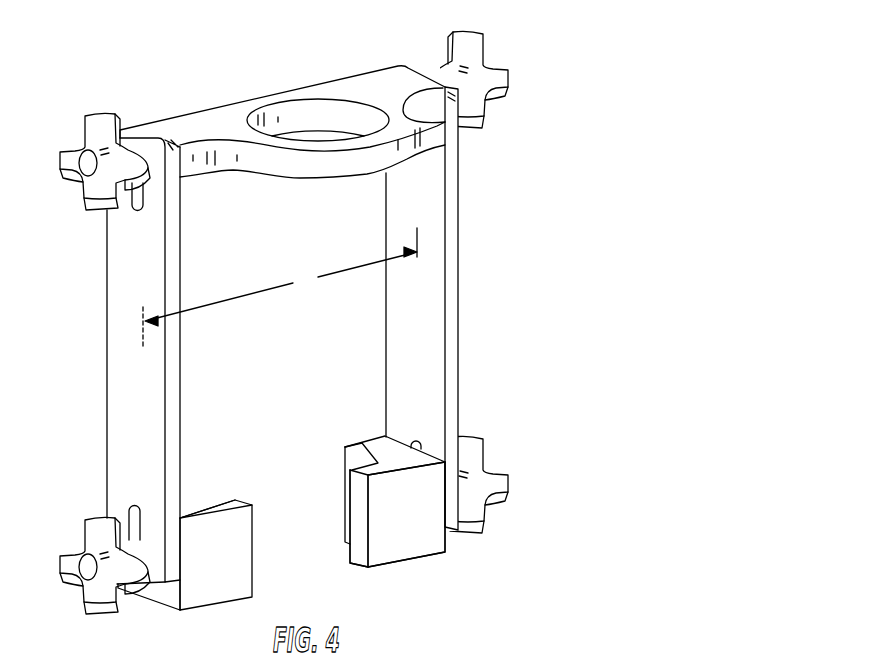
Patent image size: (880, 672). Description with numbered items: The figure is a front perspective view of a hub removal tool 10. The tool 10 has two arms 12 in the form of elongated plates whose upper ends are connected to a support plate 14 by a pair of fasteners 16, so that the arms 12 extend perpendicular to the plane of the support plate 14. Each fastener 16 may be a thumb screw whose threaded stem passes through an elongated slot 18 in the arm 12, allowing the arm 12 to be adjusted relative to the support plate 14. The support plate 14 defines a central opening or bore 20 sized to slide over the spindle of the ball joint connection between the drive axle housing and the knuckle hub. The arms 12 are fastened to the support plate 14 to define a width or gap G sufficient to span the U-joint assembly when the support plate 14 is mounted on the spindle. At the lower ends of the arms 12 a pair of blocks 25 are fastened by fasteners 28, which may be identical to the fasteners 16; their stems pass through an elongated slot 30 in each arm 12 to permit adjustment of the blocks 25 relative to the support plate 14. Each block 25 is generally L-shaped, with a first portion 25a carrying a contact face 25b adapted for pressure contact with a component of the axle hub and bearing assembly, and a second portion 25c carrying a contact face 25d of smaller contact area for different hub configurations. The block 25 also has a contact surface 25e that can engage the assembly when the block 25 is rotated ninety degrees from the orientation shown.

The hub removal tool 10 is at (291, 310).
The arms 12 is at (453, 312).
The support plate 14 is at (282, 89).
The fasteners 16 is at (85, 133).
The elongated slot 18 is at (137, 190).
The central opening or bore 20 is at (290, 115).
The blocks 25 is at (289, 495).
The first portion 25a is at (358, 550).
The contact face 25b is at (417, 517).
The second portion 25c is at (355, 460).
The contact face 25d is at (364, 442).
The contact surface 25e is at (207, 506).
The fasteners 28 is at (82, 535).
The elongated slot 30 is at (135, 507).
The gap G is at (280, 287).